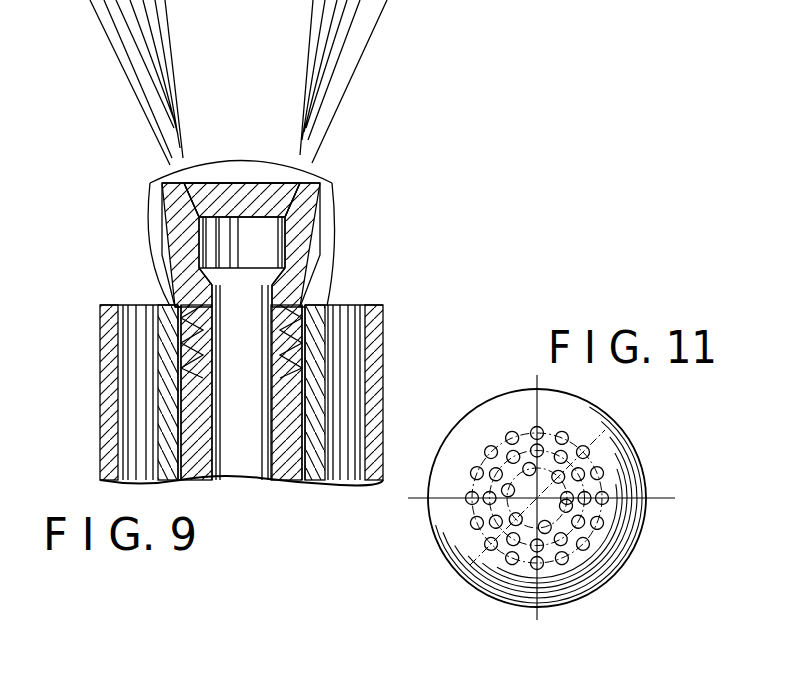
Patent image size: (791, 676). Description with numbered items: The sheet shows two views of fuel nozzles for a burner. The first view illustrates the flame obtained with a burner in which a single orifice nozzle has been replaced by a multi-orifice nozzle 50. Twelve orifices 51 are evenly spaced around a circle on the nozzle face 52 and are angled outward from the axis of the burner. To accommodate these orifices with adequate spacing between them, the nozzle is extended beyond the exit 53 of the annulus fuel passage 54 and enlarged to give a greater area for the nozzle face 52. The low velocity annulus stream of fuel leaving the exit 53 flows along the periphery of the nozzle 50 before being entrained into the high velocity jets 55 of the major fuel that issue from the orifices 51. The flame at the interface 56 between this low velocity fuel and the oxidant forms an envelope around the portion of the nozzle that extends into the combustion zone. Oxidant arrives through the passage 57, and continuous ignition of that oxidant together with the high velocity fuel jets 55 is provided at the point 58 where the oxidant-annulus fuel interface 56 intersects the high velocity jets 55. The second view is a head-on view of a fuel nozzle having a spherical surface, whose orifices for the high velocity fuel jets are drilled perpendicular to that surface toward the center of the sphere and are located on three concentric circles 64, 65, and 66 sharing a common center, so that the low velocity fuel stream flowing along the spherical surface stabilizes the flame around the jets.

In FIG. 9, the multi-orifice nozzle 50 is at (321, 228).
In FIG. 9, the orifices 51 is at (312, 184).
In FIG. 9, the nozzle face 52 is at (224, 178).
In FIG. 9, the exit 53 is at (166, 302).
In FIG. 9, the annulus fuel passage 54 is at (308, 350).
In FIG. 9, the high velocity jets 55 is at (366, 50).
In FIG. 9, the interface 56 is at (148, 224).
In FIG. 9, the oxidant passage 57 is at (140, 382).
In FIG. 9, the ignition point 58 is at (311, 166).
In FIG. 11, the first concentric circle 64 is at (593, 462).
In FIG. 11, the second concentric circle 65 is at (483, 508).
In FIG. 11, the third concentric circle 66 is at (507, 498).